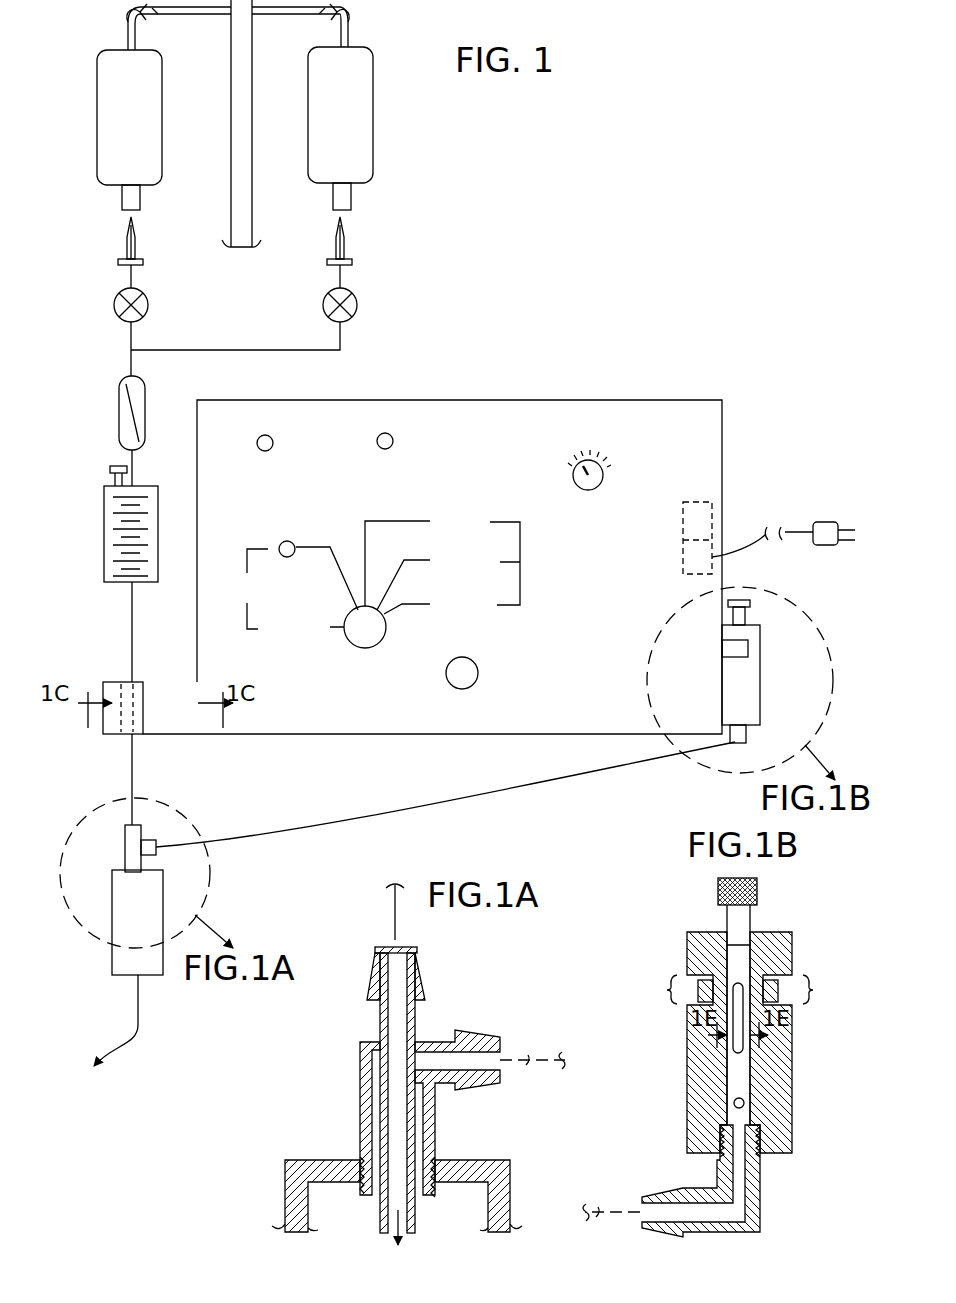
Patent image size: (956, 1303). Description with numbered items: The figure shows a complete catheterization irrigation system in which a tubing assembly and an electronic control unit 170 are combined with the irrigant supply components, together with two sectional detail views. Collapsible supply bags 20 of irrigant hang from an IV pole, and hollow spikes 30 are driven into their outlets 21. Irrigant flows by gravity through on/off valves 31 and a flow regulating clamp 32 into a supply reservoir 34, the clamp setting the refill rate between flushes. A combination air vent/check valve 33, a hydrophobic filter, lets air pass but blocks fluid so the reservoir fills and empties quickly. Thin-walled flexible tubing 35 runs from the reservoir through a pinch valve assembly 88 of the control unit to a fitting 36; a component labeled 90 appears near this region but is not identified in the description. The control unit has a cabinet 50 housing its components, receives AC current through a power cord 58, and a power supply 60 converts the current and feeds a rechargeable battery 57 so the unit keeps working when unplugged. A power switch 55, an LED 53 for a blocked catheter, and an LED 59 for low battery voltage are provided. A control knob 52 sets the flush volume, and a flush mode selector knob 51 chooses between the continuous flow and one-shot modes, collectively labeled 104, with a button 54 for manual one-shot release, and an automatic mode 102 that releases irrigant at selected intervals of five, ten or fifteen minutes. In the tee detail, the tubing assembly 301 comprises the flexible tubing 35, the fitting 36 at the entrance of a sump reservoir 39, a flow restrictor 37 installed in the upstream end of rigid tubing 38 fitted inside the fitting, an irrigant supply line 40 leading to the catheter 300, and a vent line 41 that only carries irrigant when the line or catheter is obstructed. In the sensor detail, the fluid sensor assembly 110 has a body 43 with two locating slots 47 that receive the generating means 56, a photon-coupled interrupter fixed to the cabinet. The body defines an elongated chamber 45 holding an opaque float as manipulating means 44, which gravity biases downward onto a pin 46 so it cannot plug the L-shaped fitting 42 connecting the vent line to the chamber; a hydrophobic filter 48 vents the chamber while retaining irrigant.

In FIG. 1, the collapsible supply bags 20 is at (97, 126).
In FIG. 1, the outlets 21 is at (140, 197).
In FIG. 1, the hollow spikes 30 is at (135, 238).
In FIG. 1, the on/off valves 31 is at (148, 305).
In FIG. 1, the flow regulating clamp 32 is at (119, 428).
In FIG. 1, the combination air vent/check valve 33 is at (110, 470).
In FIG. 1, the supply reservoir 34 is at (104, 548).
In FIG. 1, the thin-walled flexible tubing 35 is at (131, 636).
In FIG. 1A, the thin-walled flexible tubing 35 is at (390, 930).
In FIG. 1, the fitting 36 is at (125, 845).
In FIG. 1A, the fitting 36 is at (418, 1013).
In FIG. 1A, the flow restrictor 37 is at (412, 948).
In FIG. 1A, the rigid tubing 38 is at (383, 1127).
In FIG. 1, the sump reservoir 39 is at (112, 957).
In FIG. 1A, the sump reservoir 39 is at (285, 1200).
In FIG. 1, the irrigant supply line 40 is at (137, 1032).
In FIG. 1, the vent line 41 is at (397, 808).
In FIG. 1A, the vent line 41 is at (542, 1044).
In FIG. 1B, the vent line 41 is at (608, 1197).
In FIG. 1, the fitting 42 is at (750, 744).
In FIG. 1B, the fitting 42 is at (760, 1200).
In FIG. 1, the body 43 is at (760, 690).
In FIG. 1B, the body 43 is at (792, 1050).
In FIG. 1B, the manipulating means 44 is at (741, 1055).
In FIG. 1B, the elongated chamber 45 is at (735, 1085).
In FIG. 1B, the pin 46 is at (745, 1103).
In FIG. 1B, the locating slots 47 is at (741, 990).
In FIG. 1, the hydrophobic filter 48 is at (748, 600).
In FIG. 1B, the hydrophobic filter 48 is at (758, 892).
In FIG. 1, the cabinet 50 is at (292, 715).
In FIG. 1, the flush mode selector knob 51 is at (355, 648).
In FIG. 1, the control knob 52 is at (600, 487).
In FIG. 1, the LED 53 is at (273, 443).
In FIG. 1, the button 54 is at (293, 542).
In FIG. 1, the power switch 55 is at (478, 673).
In FIG. 1, the means for generating a control circuit 56 is at (755, 648).
In FIG. 1B, the means for generating a control circuit 56 is at (698, 1005).
In FIG. 1, the rechargeable battery 57 is at (712, 508).
In FIG. 1, the power cord 58 is at (827, 522).
In FIG. 1, the LED 59 is at (393, 441).
In FIG. 1, the power supply 60 is at (712, 562).
In FIG. 1, the pinch valve assembly 88 is at (94, 741).
In FIG. 1, the sensor line 90 is at (135, 738).
In FIG. 1, the automatic mode 102 is at (557, 583).
In FIG. 1, the continuous flow and one-shot modes 104 is at (242, 576).
In FIG. 1, the fluid sensor assembly 110 is at (836, 652).
In FIG. 1, the electronic control unit 170 is at (772, 418).
In FIG. 1, the catheter 300 is at (124, 1123).
In FIG. 1, the tubing assembly 301 is at (226, 886).